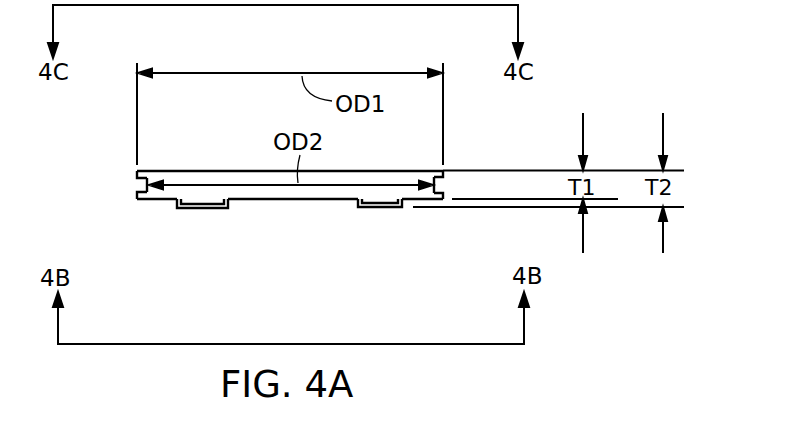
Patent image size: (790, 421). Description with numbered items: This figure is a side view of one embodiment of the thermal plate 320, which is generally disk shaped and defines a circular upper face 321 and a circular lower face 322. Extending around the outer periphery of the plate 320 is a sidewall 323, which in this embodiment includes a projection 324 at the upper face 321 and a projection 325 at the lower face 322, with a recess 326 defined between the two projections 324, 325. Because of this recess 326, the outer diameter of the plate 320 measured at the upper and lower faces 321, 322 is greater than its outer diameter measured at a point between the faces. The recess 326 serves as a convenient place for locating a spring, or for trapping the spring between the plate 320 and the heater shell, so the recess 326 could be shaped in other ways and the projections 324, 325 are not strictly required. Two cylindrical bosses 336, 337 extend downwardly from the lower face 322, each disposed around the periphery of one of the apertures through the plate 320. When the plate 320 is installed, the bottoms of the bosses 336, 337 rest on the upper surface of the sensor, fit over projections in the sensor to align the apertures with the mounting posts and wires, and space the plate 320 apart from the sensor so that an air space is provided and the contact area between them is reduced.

The plate 320 is at (304, 181).
The upper face 321 is at (157, 170).
The lower face 322 is at (283, 200).
The sidewall 323 is at (144, 184).
The projection 324 is at (138, 180).
The projection 325 is at (139, 189).
The recess 326 is at (450, 186).
The boss 336 is at (355, 203).
The boss 337 is at (203, 210).